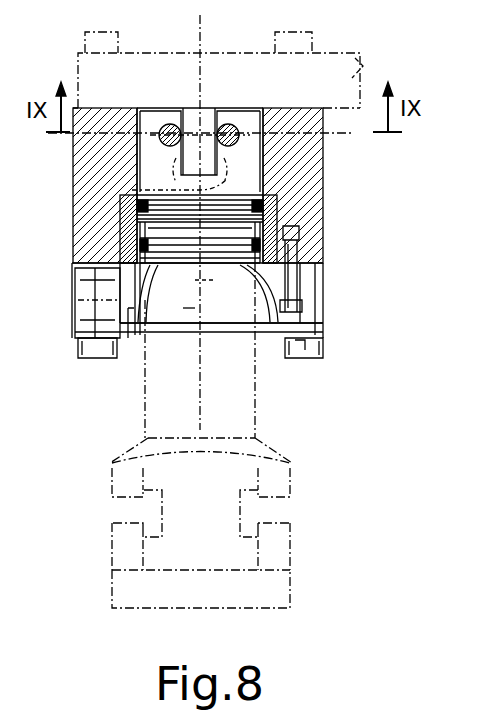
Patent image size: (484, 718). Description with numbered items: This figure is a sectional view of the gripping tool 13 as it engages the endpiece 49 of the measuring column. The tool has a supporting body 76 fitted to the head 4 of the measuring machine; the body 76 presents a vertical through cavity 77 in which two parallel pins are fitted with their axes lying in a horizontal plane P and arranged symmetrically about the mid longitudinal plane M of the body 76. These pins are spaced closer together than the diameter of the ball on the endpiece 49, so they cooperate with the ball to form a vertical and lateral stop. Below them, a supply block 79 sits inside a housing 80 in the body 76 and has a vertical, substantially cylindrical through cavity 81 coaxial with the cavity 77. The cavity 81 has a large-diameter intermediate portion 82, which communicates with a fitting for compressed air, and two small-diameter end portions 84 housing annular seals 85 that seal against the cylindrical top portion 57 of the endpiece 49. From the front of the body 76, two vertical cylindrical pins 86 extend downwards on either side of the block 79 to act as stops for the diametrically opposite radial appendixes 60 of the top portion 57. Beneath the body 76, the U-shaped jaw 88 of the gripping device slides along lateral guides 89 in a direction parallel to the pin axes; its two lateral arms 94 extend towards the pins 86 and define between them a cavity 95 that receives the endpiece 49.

The head 4 is at (357, 57).
The gripping tool 13 is at (352, 246).
The endpiece 49 is at (140, 430).
The top portion 57 is at (255, 410).
The radial appendixes 60 is at (196, 150).
The supporting body 76 is at (312, 180).
The vertical through cavity 77 is at (144, 126).
The supply block 79 is at (268, 220).
The housing 80 is at (72, 271).
The through cavity 81 is at (218, 232).
The large-diameter intermediate portion 82 is at (298, 214).
The small-diameter end portions 84 is at (158, 192).
The annular seals 85 is at (124, 208).
The vertical cylindrical pins 86 is at (295, 283).
The U-shaped jaw 88 is at (172, 348).
The lateral guides 89 is at (120, 268).
The lateral arms 94 is at (130, 308).
The cavity 95 is at (183, 308).
The mid longitudinal plane M is at (208, 42).
The horizontal plane P is at (340, 138).